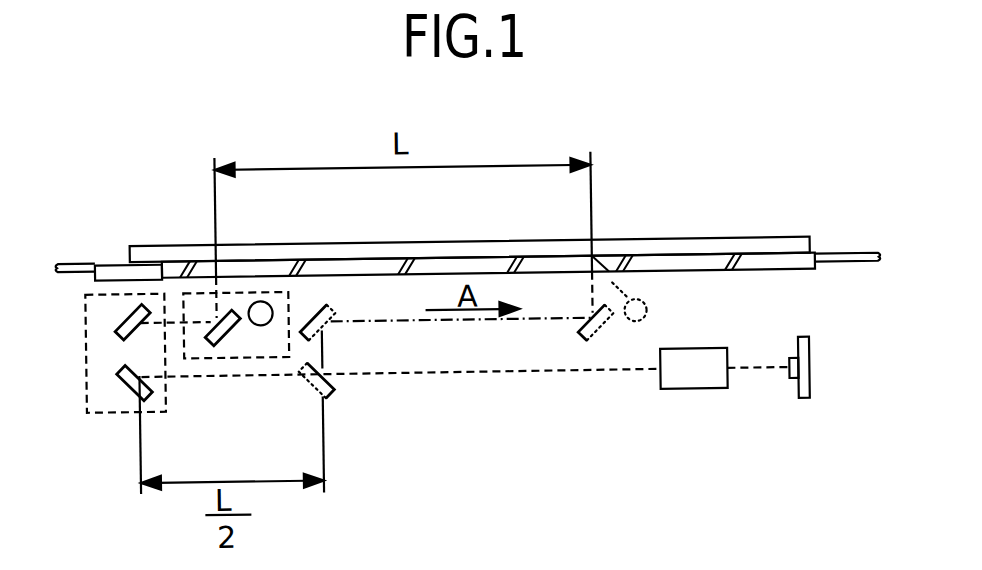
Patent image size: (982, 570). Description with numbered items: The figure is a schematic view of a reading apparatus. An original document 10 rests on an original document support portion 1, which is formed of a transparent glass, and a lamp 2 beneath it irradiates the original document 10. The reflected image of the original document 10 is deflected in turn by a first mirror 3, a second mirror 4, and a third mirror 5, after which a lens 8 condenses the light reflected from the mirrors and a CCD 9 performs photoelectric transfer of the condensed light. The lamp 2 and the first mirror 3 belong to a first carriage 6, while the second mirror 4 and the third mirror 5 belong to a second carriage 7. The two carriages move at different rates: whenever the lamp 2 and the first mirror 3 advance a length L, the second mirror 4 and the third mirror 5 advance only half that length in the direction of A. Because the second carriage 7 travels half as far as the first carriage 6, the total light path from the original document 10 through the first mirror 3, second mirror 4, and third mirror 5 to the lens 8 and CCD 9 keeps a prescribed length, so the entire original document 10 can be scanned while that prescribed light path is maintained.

The original document support portion 1 is at (375, 268).
The lamp 2 is at (268, 302).
The first mirror 3 is at (218, 348).
The second mirror 4 is at (117, 330).
The third mirror 5 is at (115, 376).
The first carriage 6 is at (262, 359).
The second carriage 7 is at (99, 412).
The lens 8 is at (693, 395).
The CCD 9 is at (794, 392).
The original document 10 is at (777, 246).